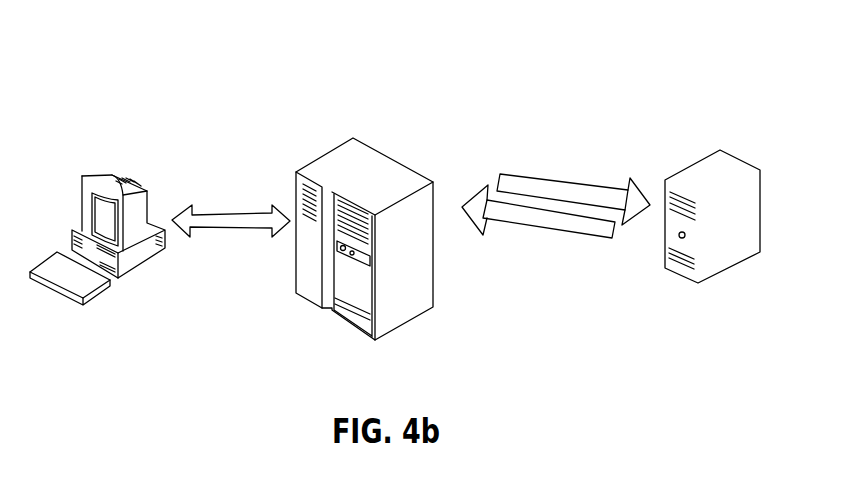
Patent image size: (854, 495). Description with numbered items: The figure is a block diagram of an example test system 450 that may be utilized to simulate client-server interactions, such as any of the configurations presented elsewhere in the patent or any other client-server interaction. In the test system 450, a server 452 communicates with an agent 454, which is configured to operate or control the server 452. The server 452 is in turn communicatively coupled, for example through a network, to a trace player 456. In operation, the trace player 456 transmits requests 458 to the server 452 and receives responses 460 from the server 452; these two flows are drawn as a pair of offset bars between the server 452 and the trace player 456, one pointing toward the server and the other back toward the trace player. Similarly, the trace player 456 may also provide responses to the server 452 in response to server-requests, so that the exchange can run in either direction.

The test system 450 is at (172, 90).
The server 452 is at (343, 143).
The agent 454 is at (98, 180).
The trace player 456 is at (720, 157).
The requests 458 is at (565, 188).
The responses 460 is at (598, 238).